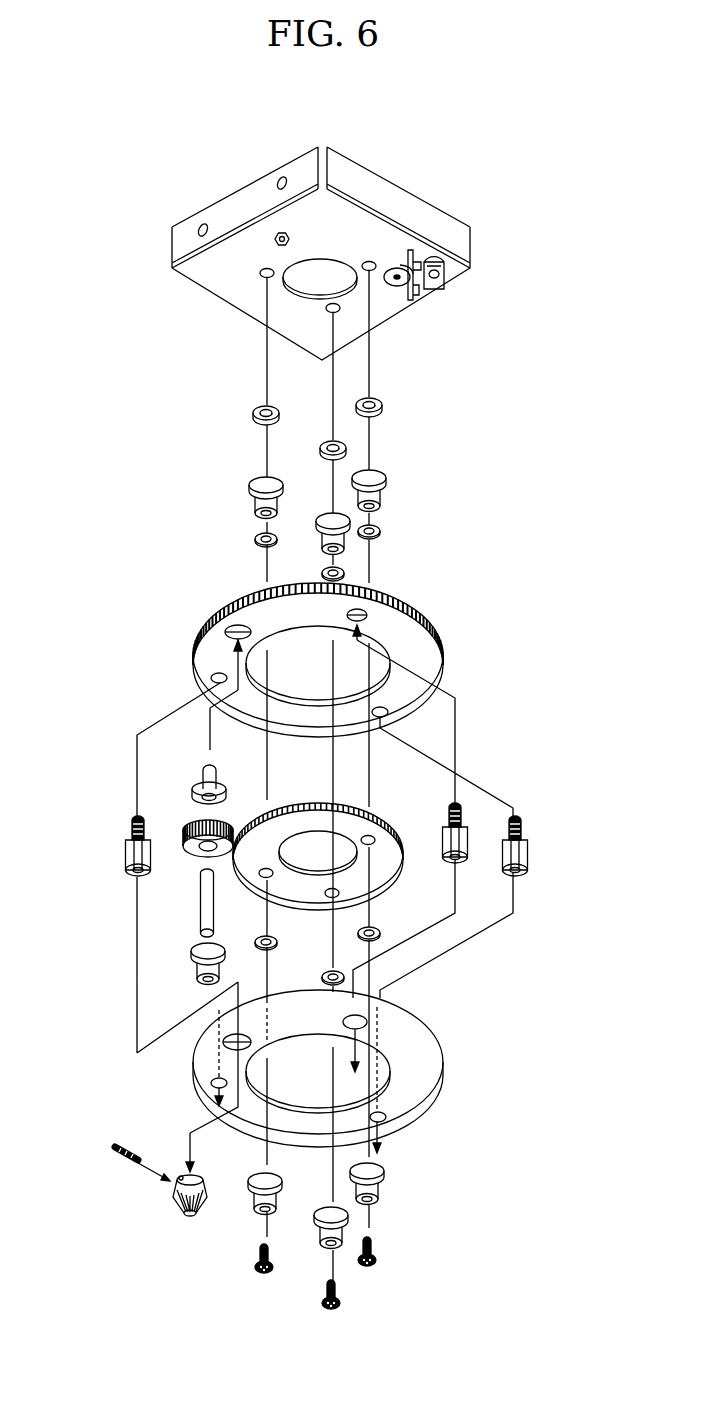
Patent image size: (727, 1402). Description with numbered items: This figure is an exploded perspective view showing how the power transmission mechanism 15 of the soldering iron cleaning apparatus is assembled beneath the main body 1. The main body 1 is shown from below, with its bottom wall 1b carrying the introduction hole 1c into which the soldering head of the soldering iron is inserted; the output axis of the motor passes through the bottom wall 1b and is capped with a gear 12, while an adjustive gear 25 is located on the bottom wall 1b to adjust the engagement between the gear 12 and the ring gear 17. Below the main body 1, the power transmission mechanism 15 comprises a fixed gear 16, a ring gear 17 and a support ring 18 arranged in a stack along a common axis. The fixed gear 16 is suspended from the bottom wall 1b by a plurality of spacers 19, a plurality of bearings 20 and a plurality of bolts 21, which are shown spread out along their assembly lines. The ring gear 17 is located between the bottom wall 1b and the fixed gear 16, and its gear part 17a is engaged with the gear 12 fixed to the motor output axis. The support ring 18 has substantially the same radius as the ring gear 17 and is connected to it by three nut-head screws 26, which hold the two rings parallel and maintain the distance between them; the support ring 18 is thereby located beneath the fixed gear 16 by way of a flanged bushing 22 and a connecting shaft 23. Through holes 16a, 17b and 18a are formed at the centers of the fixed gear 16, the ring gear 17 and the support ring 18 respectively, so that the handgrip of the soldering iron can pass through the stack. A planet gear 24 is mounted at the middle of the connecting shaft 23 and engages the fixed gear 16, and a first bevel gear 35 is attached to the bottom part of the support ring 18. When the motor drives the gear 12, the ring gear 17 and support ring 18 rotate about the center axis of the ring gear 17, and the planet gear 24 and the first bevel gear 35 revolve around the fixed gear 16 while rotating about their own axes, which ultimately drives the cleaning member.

The main body 1 is at (192, 214).
The bottom wall 1b is at (233, 284).
The introduction hole 1c is at (310, 282).
The gear 12 is at (390, 262).
The adjustive gear 25 is at (447, 280).
The power transmission mechanism 15 is at (525, 543).
The spacers 19 is at (253, 414).
The bearings 20 is at (241, 498).
The ring gear 17 is at (287, 644).
The gear part 17a is at (230, 604).
The through hole 17b is at (306, 668).
The flanged bushing 22 is at (197, 783).
The planet gear 24 is at (196, 858).
The connecting shaft 23 is at (203, 907).
The nut-head screws 26 is at (126, 860).
The fixed gear 16 is at (335, 836).
The through hole 16a is at (313, 848).
The support ring 18 is at (281, 1085).
The through hole 18a is at (307, 1080).
The first bevel gear 35 is at (170, 1190).
The bolts 21 is at (377, 1255).